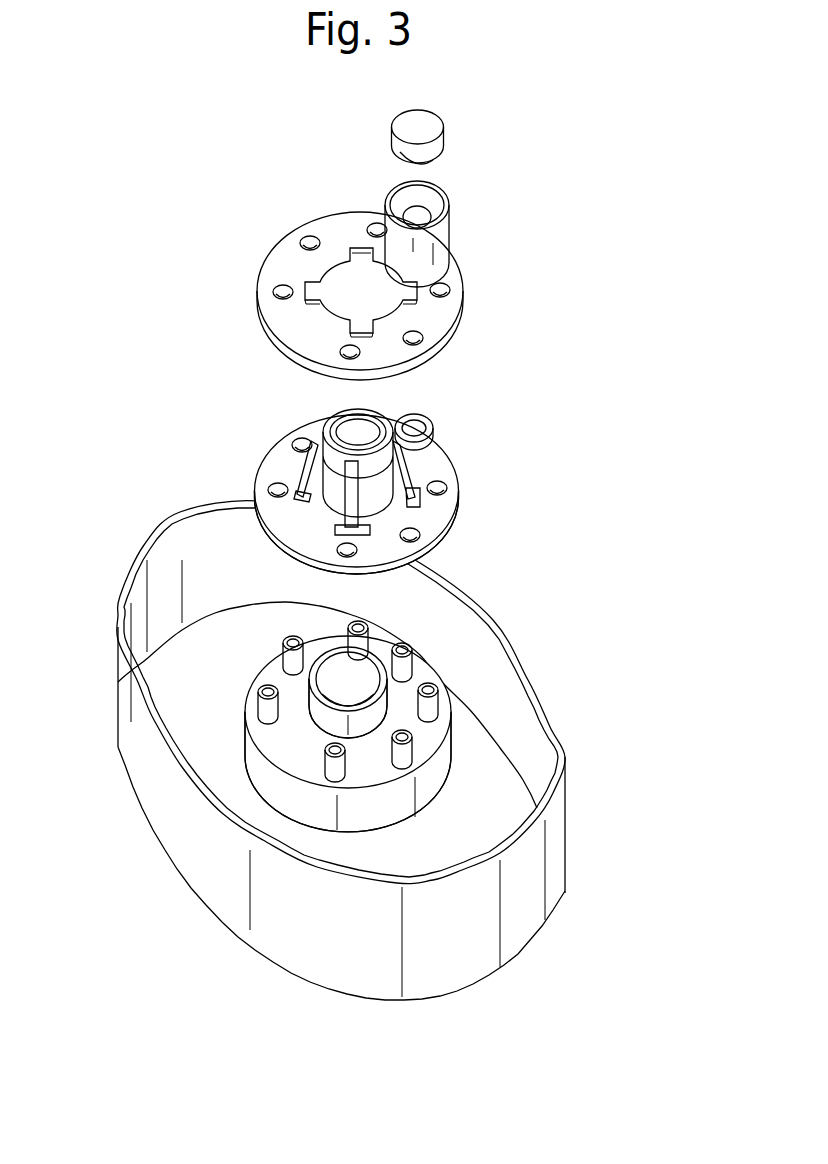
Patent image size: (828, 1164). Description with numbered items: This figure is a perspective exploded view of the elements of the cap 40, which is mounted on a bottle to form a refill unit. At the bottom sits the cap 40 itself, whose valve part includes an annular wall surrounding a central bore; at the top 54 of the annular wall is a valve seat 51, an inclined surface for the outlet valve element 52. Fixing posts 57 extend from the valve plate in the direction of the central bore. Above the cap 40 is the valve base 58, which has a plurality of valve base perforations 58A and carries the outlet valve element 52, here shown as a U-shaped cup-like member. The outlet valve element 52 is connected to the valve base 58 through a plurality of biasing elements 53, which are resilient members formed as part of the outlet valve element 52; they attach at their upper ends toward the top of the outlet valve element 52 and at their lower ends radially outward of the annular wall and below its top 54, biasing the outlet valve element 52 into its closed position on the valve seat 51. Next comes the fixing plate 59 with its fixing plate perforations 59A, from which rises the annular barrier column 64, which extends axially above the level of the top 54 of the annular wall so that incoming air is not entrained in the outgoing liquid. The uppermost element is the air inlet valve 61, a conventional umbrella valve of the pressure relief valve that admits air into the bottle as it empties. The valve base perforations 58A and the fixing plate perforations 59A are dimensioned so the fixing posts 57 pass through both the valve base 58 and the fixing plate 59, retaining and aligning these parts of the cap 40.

The cap 40 is at (540, 853).
The valve seat 51 is at (428, 664).
The top of the annular wall 54 is at (380, 716).
The fixing posts 57 is at (412, 753).
The valve base 58 is at (445, 472).
The valve base perforations 58A is at (300, 445).
The outlet valve element 52 is at (435, 446).
The biasing elements 53 is at (335, 487).
The fixing plate 59 is at (435, 320).
The fixing plate perforations 59A is at (282, 290).
The annular barrier column 64 is at (443, 237).
The air inlet valve 61 is at (438, 137).